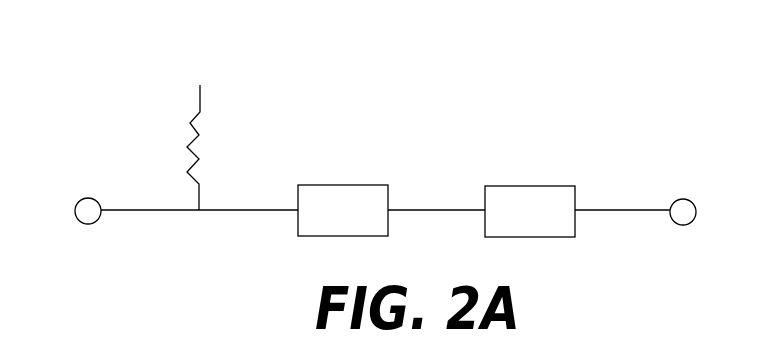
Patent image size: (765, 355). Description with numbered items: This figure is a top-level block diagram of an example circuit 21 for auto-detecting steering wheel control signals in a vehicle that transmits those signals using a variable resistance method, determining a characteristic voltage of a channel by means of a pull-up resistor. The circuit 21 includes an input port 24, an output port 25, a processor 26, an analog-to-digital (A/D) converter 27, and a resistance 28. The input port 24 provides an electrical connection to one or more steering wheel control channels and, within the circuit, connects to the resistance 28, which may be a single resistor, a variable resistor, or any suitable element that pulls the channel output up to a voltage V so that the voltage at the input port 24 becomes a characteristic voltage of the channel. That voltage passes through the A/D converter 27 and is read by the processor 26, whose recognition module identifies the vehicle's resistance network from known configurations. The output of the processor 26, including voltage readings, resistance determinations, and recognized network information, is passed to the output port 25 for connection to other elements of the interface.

The circuit 21 is at (115, 68).
The input port 24 is at (88, 198).
The output port 25 is at (676, 199).
The processor 26 is at (527, 186).
The analog-to-digital (A/D) converter 27 is at (338, 185).
The resistance 28 is at (201, 135).